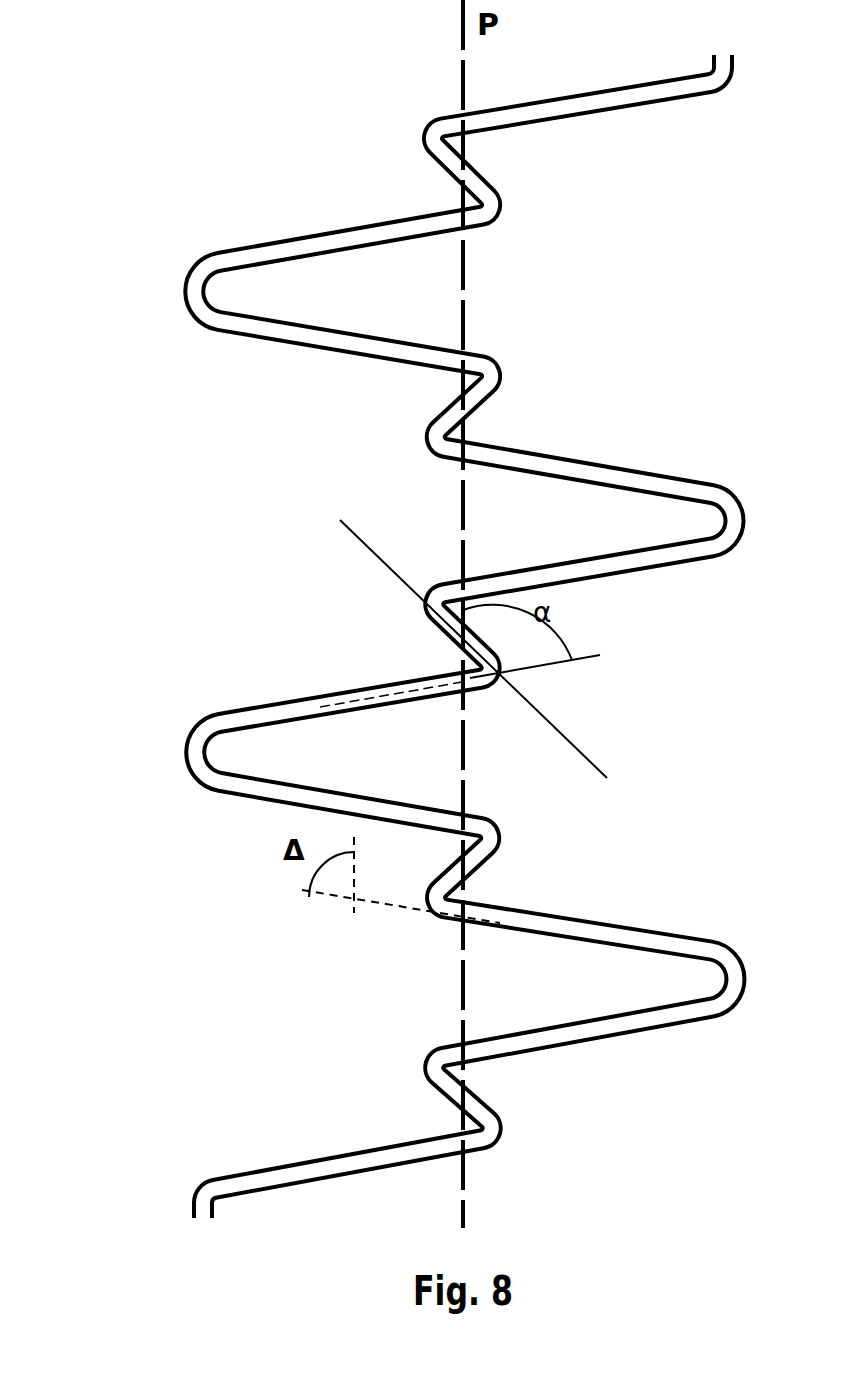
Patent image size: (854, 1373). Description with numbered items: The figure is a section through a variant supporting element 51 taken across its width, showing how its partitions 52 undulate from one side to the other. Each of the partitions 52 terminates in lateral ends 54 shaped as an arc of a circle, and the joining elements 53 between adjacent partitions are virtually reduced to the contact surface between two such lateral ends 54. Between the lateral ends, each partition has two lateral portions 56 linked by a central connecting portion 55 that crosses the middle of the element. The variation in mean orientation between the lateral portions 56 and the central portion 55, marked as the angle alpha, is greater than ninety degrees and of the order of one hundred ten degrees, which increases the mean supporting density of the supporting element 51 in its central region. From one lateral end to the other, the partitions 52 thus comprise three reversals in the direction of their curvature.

The supporting element 51 is at (270, 467).
The partitions 52 is at (560, 355).
The joining elements 53 is at (190, 290).
The lateral ends 54 is at (207, 262).
The central connecting portion 55 is at (372, 123).
The lateral portions 56 is at (332, 703).